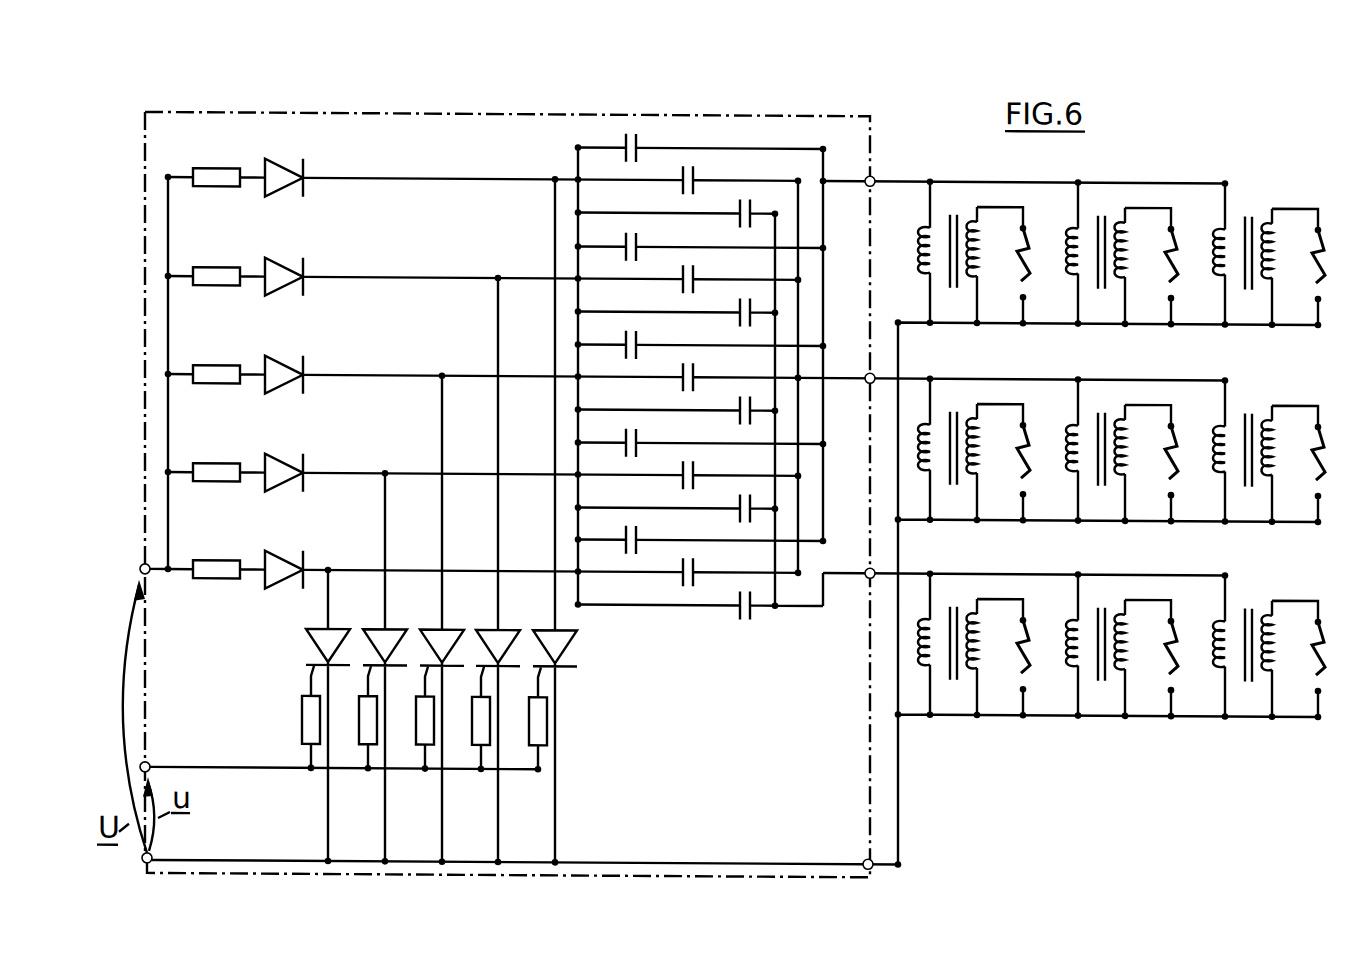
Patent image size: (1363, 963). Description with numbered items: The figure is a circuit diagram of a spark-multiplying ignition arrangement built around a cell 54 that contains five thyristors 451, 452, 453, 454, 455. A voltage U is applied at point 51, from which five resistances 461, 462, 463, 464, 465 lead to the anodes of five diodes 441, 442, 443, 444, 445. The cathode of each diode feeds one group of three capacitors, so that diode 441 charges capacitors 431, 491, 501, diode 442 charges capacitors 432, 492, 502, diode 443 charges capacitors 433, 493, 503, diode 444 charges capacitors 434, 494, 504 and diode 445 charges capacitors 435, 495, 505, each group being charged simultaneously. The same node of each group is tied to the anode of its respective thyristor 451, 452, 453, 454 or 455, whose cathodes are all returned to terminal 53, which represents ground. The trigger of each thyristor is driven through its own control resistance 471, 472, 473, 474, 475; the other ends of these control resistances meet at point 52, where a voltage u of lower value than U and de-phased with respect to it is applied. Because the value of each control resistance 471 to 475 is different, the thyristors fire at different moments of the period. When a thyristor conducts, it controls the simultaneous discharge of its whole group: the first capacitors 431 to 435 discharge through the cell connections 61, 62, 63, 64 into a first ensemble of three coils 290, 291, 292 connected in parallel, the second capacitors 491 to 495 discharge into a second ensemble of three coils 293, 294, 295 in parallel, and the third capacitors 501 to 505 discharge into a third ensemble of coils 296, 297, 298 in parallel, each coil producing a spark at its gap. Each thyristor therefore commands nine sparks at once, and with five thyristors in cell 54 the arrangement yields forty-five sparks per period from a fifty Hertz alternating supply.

The connection point 51 is at (139, 568).
The connection point 52 is at (150, 763).
The ground terminal 53 is at (152, 856).
The cell 54 is at (872, 789).
The output terminal 61 is at (865, 171).
The output terminal 62 is at (865, 368).
The output terminal 63 is at (865, 563).
The output terminal 64 is at (863, 853).
The capacitor 431 is at (622, 136).
The capacitor 432 is at (622, 235).
The capacitor 433 is at (622, 333).
The capacitor 434 is at (622, 431).
The capacitor 435 is at (622, 528).
The capacitor 491 is at (692, 160).
The capacitor 492 is at (692, 259).
The capacitor 493 is at (692, 357).
The capacitor 494 is at (692, 455).
The capacitor 495 is at (692, 552).
The capacitor 501 is at (749, 193).
The capacitor 502 is at (749, 292).
The capacitor 503 is at (749, 390).
The capacitor 504 is at (749, 488).
The capacitor 505 is at (749, 585).
The diode 441 is at (283, 166).
The diode 442 is at (283, 265).
The diode 443 is at (283, 363).
The diode 444 is at (283, 461).
The diode 445 is at (283, 558).
The resistance 461 is at (218, 166).
The resistance 462 is at (218, 265).
The resistance 463 is at (218, 363).
The resistance 464 is at (218, 461).
The resistance 465 is at (218, 558).
The thyristor 451 is at (545, 635).
The thyristor 452 is at (488, 635).
The thyristor 453 is at (432, 635).
The thyristor 454 is at (375, 635).
The thyristor 455 is at (318, 635).
The control resistance 471 is at (541, 717).
The control resistance 472 is at (484, 717).
The control resistance 473 is at (428, 717).
The control resistance 474 is at (371, 717).
The control resistance 475 is at (314, 717).
The coil 290 is at (951, 206).
The coil 291 is at (1099, 206).
The coil 292 is at (1246, 206).
The coil 293 is at (951, 403).
The coil 294 is at (1099, 403).
The coil 295 is at (1246, 403).
The coil 296 is at (951, 598).
The coil 297 is at (1099, 598).
The coil 298 is at (1246, 598).